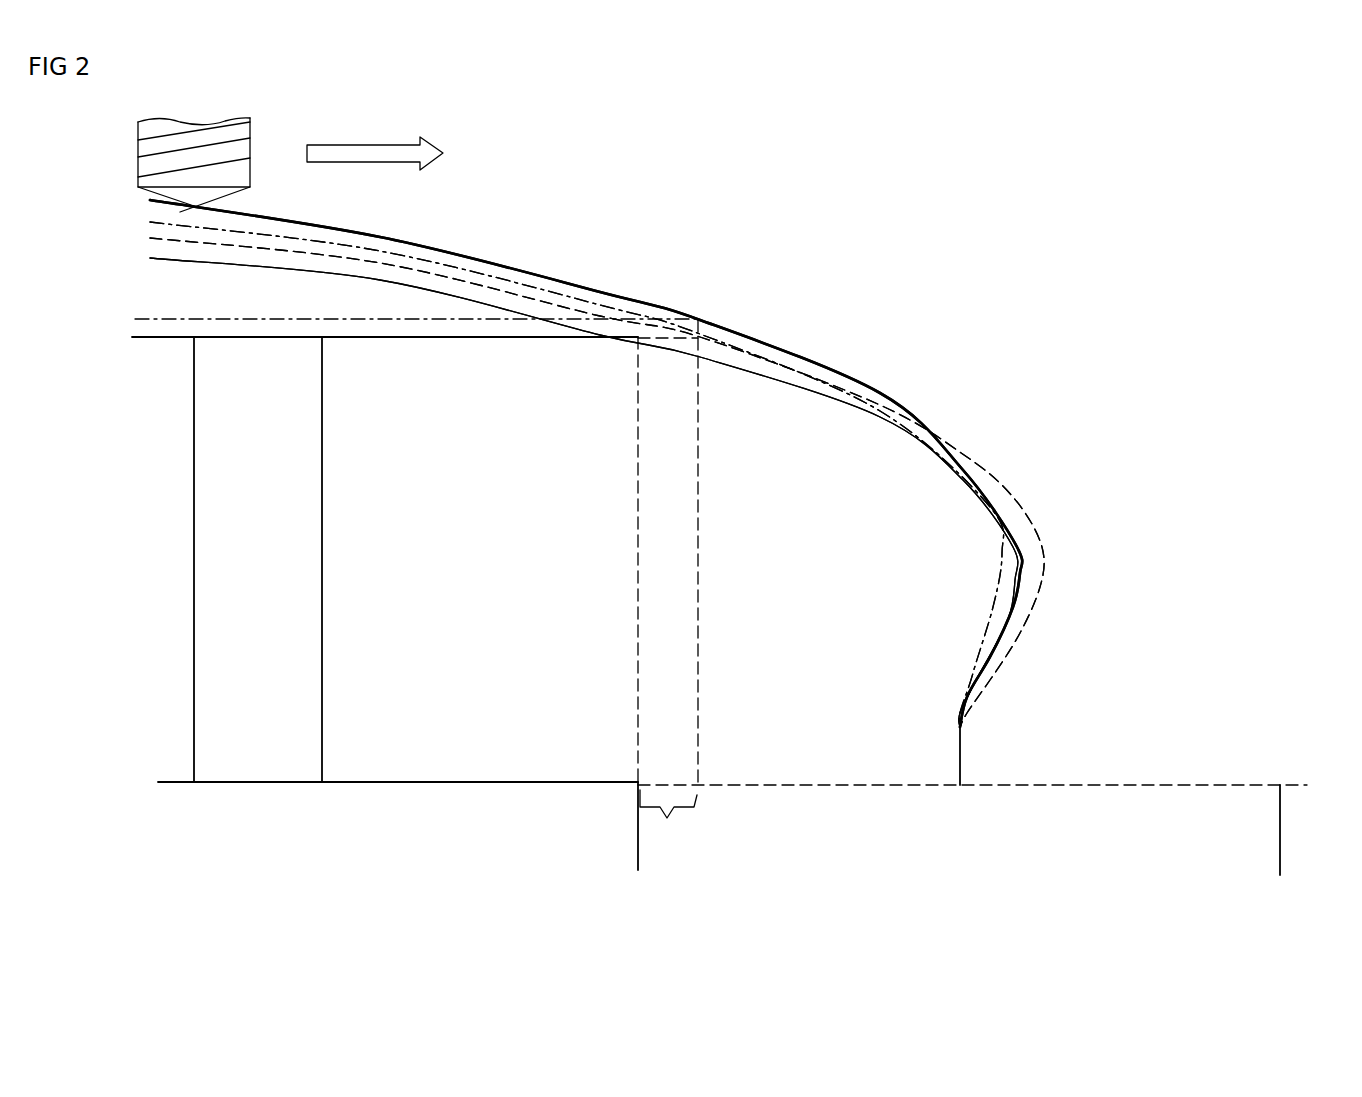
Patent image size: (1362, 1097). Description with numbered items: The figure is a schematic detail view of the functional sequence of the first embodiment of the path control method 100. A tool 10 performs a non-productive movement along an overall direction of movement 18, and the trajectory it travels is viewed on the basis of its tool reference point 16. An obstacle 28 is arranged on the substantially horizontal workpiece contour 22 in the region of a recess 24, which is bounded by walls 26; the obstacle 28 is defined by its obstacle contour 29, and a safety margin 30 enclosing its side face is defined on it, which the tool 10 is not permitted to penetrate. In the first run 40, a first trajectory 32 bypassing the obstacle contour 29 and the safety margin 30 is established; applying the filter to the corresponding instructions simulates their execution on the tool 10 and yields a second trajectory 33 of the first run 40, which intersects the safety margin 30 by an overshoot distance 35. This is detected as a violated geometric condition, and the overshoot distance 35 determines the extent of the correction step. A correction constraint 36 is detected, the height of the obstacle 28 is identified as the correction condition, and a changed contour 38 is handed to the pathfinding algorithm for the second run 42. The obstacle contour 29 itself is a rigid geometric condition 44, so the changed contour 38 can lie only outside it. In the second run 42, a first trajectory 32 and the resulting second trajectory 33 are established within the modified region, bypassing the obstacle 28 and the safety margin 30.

The method 100 is at (75, 661).
The tool 10 is at (148, 156).
The tool reference point 16 is at (183, 212).
The overall direction of movement 18 is at (363, 145).
The workpiece contour 22 is at (173, 783).
The recess 24 is at (1113, 818).
The wall 26 is at (1280, 835).
The obstacle 28 is at (222, 667).
The obstacle contour 29 is at (383, 375).
The safety margin 30 is at (640, 596).
The first trajectory 32 is at (665, 309).
The second trajectory 33 is at (737, 370).
The overshoot distance 35 is at (668, 595).
The correction constraint 36 is at (142, 339).
The changed contour 38 is at (140, 320).
The first run 40 is at (828, 382).
The second run 42 is at (750, 348).
The rigid geometric condition 44 is at (709, 611).